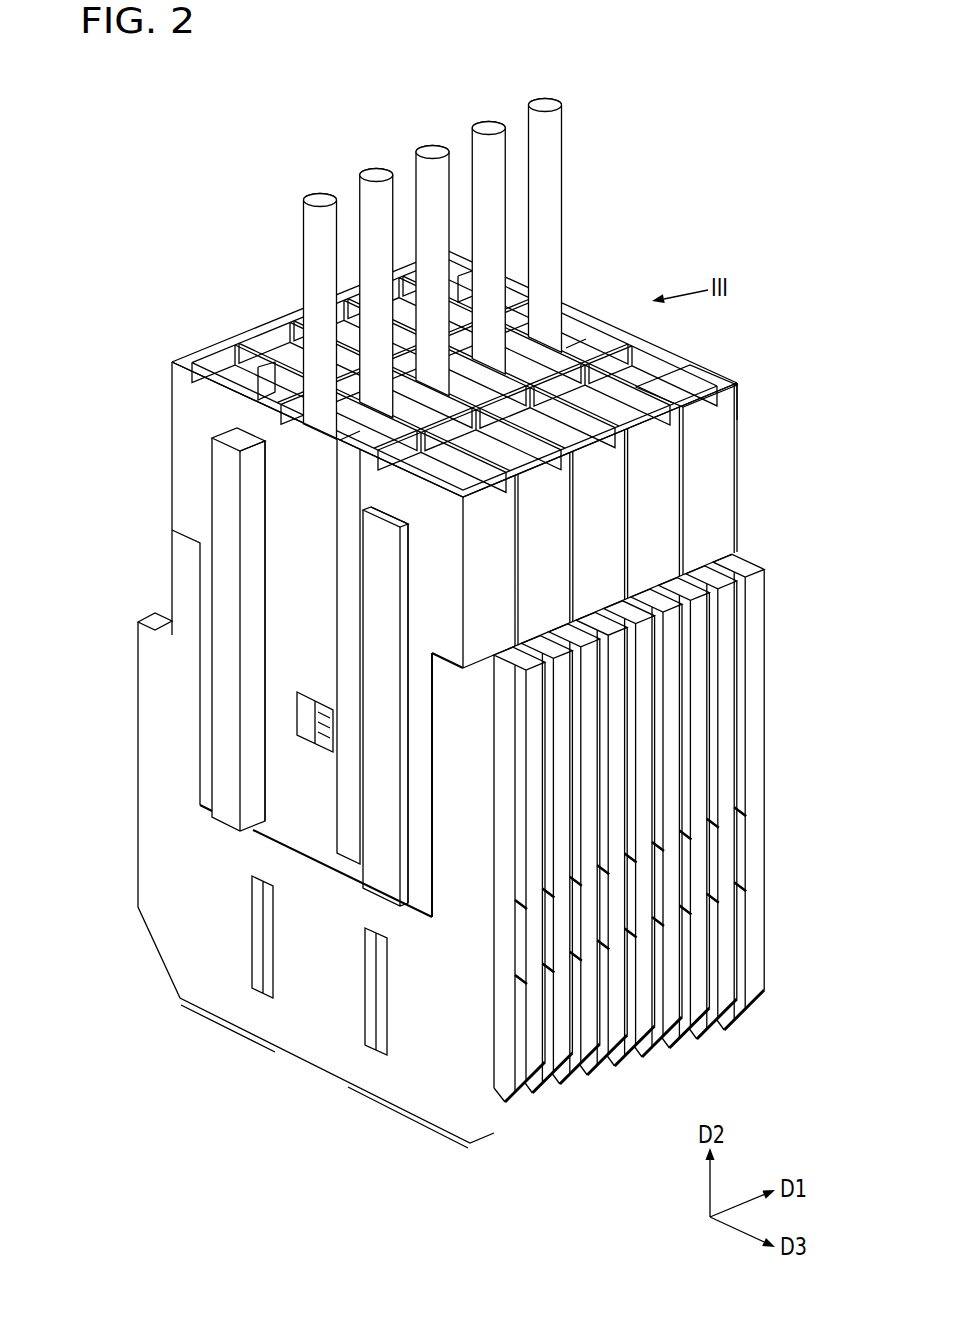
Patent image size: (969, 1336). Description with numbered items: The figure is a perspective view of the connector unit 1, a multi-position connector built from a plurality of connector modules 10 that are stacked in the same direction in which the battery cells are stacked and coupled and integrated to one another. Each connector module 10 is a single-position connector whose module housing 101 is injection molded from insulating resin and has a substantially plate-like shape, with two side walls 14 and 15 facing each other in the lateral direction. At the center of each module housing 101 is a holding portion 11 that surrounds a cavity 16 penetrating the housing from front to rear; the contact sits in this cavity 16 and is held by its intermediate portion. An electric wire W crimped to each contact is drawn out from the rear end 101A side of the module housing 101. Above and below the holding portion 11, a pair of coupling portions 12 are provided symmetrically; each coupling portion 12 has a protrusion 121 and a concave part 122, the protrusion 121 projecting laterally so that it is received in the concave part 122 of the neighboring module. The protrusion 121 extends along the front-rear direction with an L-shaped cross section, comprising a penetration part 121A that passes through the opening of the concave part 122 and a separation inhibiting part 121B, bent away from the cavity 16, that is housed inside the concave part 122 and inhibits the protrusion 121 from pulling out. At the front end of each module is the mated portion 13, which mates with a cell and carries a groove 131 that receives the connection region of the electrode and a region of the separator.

The connector unit 1 is at (170, 220).
The electric wire W is at (304, 212).
The connector module 10 is at (738, 447).
The module housing 101 is at (738, 418).
The rear end 101A is at (715, 372).
The holding portion 11 is at (470, 350).
The coupling portion 12 is at (72, 345).
The protrusion 121 is at (206, 451).
The penetration part 121A is at (383, 503).
The separation inhibiting part 121B is at (212, 492).
The concave part 122 is at (229, 374).
The mated portion 13 is at (145, 790).
The groove 131 is at (745, 715).
The side wall 14 is at (312, 640).
The side wall 15 is at (250, 378).
The cavity 16 is at (354, 423).